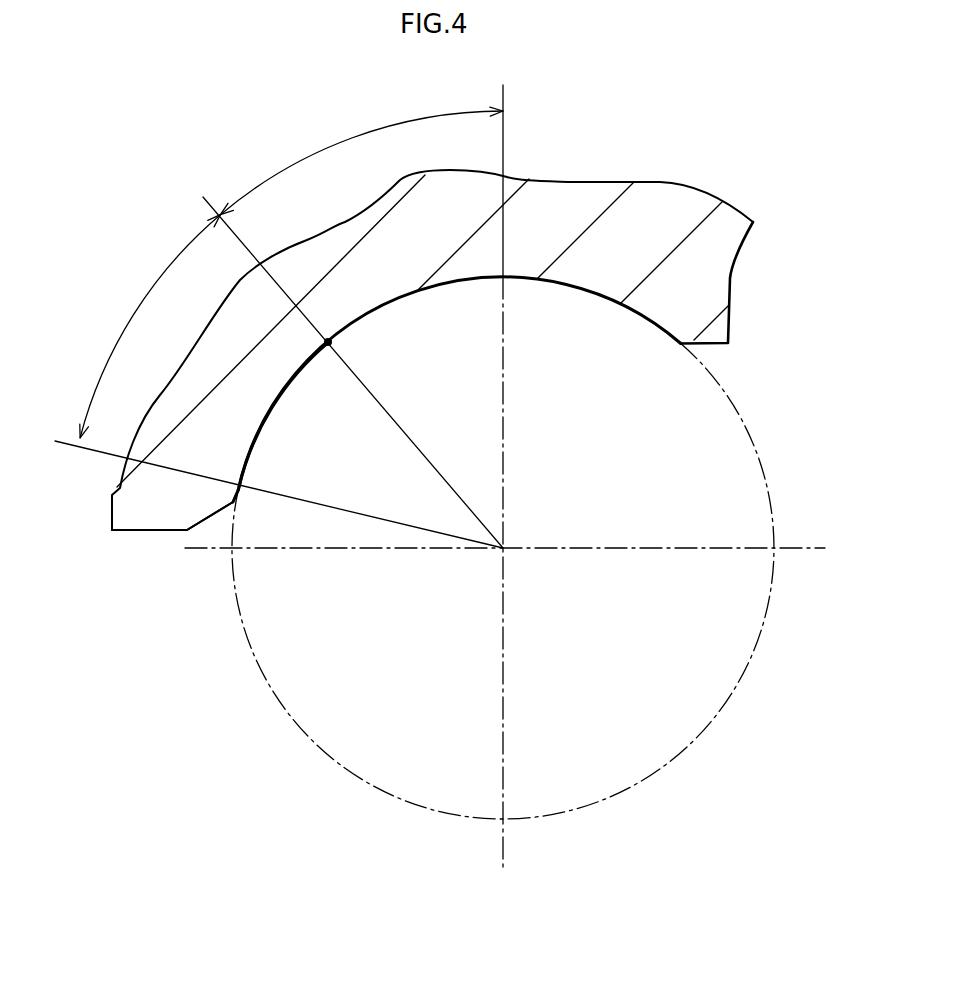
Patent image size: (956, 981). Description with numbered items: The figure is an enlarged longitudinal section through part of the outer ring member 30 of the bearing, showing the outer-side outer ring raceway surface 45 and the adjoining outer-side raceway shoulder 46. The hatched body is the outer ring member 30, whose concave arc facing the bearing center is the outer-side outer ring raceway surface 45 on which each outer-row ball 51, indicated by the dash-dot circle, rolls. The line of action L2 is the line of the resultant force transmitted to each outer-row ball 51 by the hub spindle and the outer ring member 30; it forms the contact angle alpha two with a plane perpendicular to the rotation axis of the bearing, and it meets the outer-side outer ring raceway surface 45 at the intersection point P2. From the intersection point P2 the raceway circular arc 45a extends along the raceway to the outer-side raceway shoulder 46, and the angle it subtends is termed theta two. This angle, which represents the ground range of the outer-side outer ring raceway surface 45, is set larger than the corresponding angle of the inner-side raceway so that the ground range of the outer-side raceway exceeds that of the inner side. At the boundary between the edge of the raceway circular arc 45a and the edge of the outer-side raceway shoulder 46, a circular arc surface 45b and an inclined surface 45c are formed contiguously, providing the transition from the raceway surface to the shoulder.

The outer ring member 30 is at (732, 279).
The outer-side outer ring raceway surface 45 is at (450, 284).
The raceway circular arc 45a is at (268, 418).
The circular arc surface 45b is at (237, 500).
The inclined surface 45c is at (210, 518).
The outer-side raceway shoulder 46 is at (155, 515).
The outer-row ball 51 is at (740, 650).
The intersection point P2 is at (333, 346).
The line of action L2 is at (210, 207).